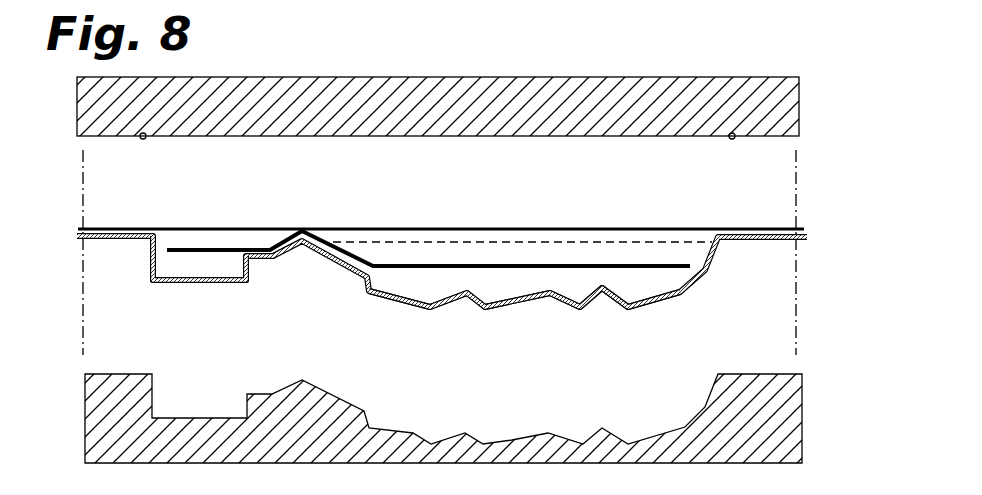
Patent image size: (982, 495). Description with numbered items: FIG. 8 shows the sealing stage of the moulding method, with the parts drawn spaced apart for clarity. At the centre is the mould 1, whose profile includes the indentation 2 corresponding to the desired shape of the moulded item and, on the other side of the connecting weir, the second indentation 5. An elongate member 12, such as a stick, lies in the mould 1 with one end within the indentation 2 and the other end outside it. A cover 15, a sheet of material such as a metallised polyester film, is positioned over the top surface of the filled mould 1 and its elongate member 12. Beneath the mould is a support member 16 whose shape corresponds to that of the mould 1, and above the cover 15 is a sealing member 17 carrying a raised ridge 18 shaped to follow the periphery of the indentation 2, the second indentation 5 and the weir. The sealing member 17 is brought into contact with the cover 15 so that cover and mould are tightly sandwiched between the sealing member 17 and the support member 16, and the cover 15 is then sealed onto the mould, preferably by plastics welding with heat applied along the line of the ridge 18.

The mould 1 is at (740, 246).
The indentation 2 is at (442, 283).
The second indentation 5 is at (201, 266).
The elongate member 12 is at (509, 272).
The cover 15 is at (577, 226).
The support member 16 is at (753, 367).
The sealing member 17 is at (684, 74).
The raised ridge 18 is at (143, 139).